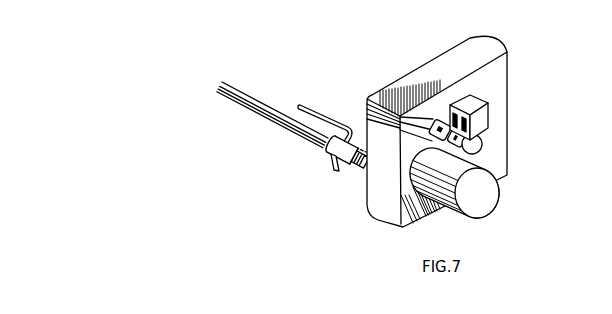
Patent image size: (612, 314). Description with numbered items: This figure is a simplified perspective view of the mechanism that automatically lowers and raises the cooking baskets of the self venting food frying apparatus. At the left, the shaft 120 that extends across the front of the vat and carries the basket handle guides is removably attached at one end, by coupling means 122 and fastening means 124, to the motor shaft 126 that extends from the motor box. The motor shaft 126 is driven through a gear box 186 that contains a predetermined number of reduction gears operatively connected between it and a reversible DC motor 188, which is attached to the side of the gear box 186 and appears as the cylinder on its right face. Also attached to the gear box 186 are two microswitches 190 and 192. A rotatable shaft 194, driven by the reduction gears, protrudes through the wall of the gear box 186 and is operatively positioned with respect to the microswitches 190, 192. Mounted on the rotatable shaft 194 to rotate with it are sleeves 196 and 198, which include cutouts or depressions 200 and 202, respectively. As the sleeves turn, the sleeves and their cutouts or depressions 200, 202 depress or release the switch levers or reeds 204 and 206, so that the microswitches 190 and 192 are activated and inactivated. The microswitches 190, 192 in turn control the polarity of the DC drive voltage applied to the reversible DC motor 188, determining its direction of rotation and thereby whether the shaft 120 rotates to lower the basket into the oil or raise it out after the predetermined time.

The shaft 120 is at (273, 120).
The coupling means 122 is at (328, 147).
The fastening means 124 is at (322, 106).
The motor shaft 126 is at (363, 166).
The gear box 186 is at (380, 200).
The reversible DC motor 188 is at (490, 193).
The microswitch 190 is at (478, 96).
The microswitch 192 is at (486, 106).
The rotatable shaft 194 is at (482, 142).
The sleeve 196 is at (375, 93).
The sleeve 198 is at (367, 111).
The cutout or depression 200 is at (430, 118).
The cutout or depression 202 is at (484, 155).
The switch lever or reed 204 is at (448, 116).
The switch lever or reed 206 is at (467, 125).